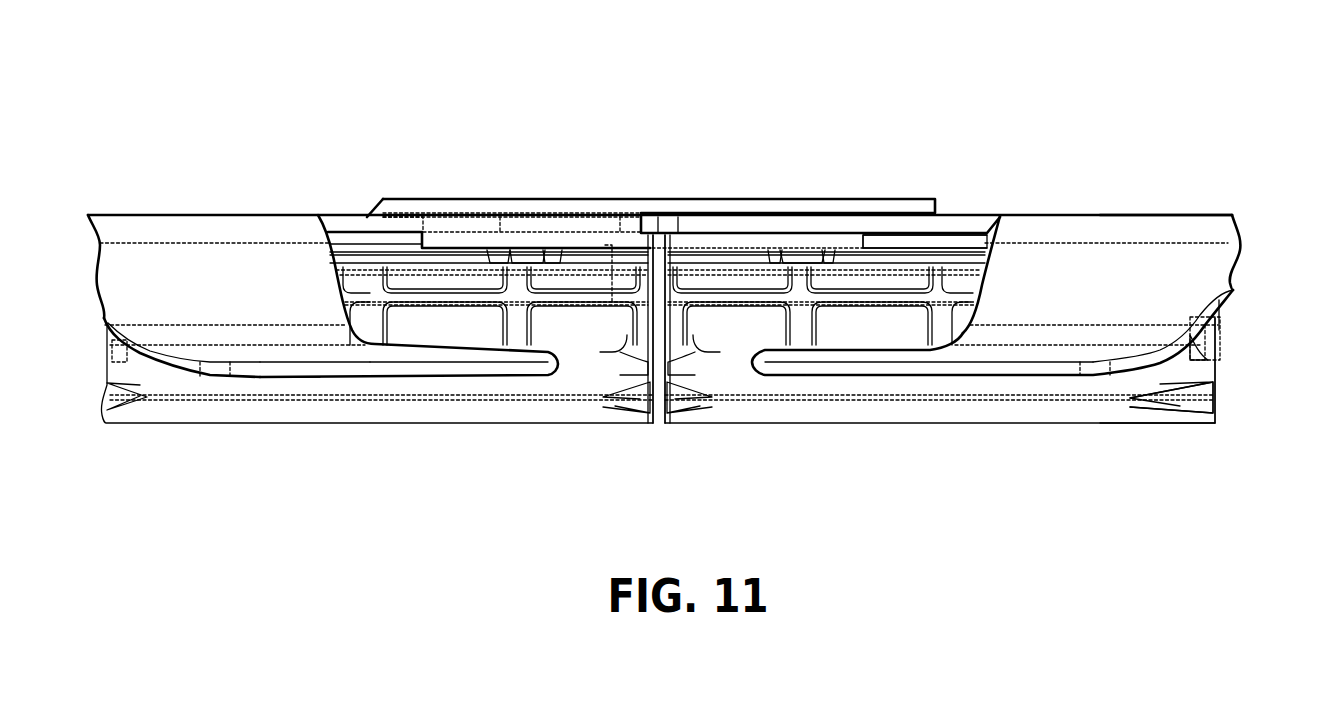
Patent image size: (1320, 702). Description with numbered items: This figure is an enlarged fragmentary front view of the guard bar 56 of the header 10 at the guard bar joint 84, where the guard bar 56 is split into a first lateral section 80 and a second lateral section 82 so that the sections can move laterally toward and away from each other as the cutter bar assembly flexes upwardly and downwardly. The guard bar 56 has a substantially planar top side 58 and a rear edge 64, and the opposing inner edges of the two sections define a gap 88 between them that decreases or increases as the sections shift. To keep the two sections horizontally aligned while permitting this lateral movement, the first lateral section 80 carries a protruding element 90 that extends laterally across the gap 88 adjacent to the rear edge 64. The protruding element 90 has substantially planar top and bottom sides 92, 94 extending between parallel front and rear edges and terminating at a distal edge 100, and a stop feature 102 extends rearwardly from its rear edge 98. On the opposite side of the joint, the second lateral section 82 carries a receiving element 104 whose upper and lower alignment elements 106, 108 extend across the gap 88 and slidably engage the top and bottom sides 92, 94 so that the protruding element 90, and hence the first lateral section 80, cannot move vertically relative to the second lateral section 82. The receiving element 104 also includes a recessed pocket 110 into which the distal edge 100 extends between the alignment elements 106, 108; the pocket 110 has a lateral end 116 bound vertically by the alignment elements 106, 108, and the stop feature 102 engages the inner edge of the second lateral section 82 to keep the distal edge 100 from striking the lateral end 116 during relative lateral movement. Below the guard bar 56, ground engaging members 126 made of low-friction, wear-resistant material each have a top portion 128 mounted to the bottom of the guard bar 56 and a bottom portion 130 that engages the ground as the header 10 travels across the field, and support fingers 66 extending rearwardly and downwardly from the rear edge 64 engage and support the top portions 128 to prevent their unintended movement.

The header 10 is at (1022, 530).
The guard bar 56 is at (1263, 240).
The top side 58 is at (1200, 215).
The rear edge 64 is at (1240, 283).
The support fingers 66 is at (1133, 362).
The first lateral section 80 is at (922, 113).
The second lateral section 82 is at (388, 118).
The guard bar joint 84 is at (710, 63).
The gap 88 is at (658, 432).
The protruding element 90 is at (563, 215).
The top side 92 is at (625, 220).
The bottom side 94 is at (607, 235).
The rear edge 98 is at (523, 213).
The distal edge 100 is at (453, 213).
The stop feature 102 is at (665, 222).
The receiving element 104 is at (518, 257).
The upper alignment element 106 is at (848, 199).
The lower alignment element 108 is at (843, 243).
The recessed pocket 110 is at (402, 226).
The lateral end 116 is at (403, 226).
The ground engaging member 126 is at (1212, 397).
The top portion 128 is at (945, 255).
The bottom portion 130 is at (1205, 427).